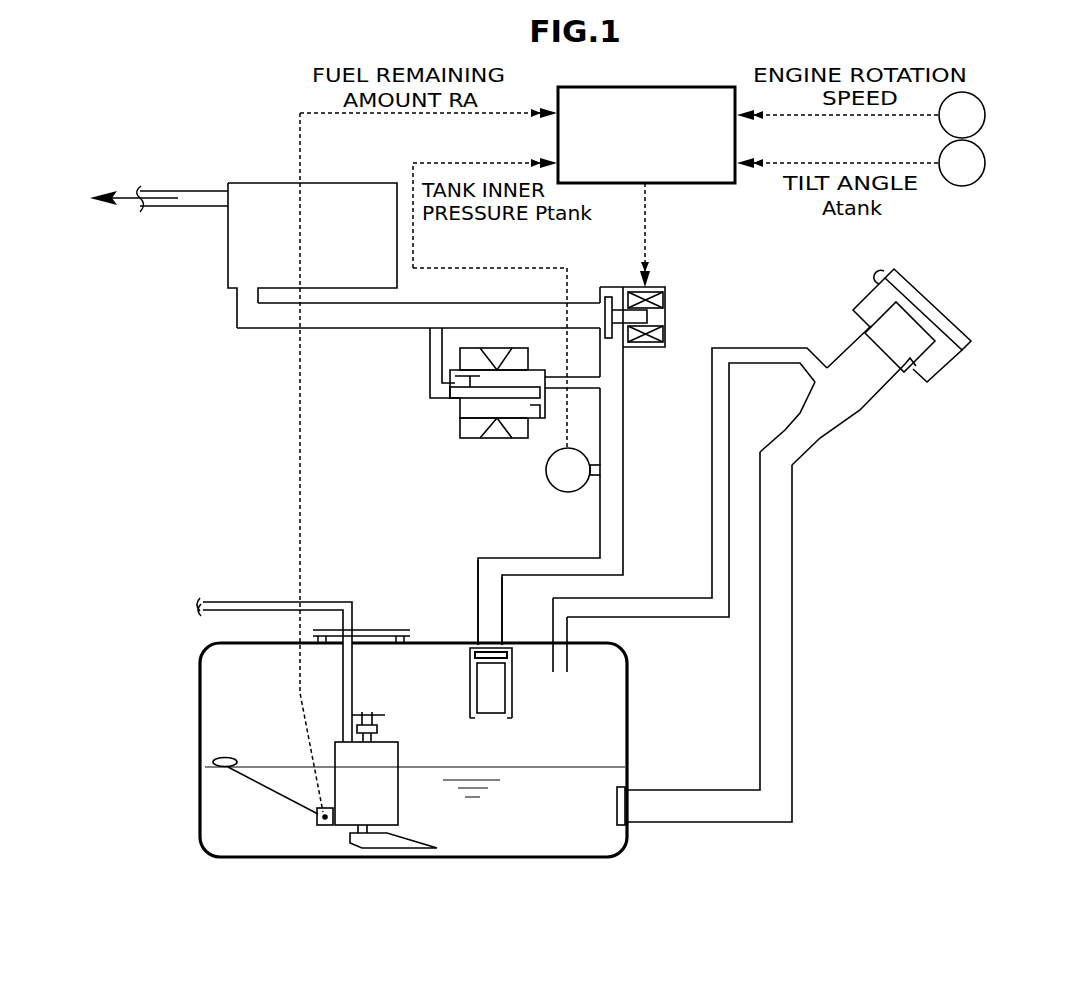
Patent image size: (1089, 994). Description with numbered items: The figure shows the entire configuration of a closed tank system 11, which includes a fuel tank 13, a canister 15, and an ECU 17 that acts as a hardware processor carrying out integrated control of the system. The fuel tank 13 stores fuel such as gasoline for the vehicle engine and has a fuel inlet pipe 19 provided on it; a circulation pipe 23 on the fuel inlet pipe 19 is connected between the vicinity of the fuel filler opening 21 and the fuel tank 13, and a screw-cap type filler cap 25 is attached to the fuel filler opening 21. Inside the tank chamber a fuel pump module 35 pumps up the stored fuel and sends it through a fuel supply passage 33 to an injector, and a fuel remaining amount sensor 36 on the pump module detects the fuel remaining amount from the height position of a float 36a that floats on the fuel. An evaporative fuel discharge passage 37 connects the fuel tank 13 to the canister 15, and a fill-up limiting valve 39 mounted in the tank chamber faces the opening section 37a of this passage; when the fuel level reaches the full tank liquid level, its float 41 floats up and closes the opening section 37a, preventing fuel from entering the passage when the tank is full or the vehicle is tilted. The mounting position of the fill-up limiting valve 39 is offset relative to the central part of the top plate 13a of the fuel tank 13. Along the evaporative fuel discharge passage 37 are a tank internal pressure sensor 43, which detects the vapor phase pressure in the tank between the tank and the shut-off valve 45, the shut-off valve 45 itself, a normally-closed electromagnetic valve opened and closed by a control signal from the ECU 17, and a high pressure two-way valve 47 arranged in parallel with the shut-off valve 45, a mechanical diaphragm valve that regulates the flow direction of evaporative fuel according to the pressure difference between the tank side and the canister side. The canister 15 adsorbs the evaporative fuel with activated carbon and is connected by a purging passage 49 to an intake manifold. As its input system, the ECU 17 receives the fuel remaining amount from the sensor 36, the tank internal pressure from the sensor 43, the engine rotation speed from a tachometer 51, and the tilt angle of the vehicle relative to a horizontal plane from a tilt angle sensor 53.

The closed tank system 11 is at (262, 92).
The fuel tank 13 is at (215, 655).
The top plate 13a is at (530, 640).
The canister 15 is at (352, 183).
The ECU 17 is at (685, 87).
The fuel inlet pipe 19 is at (778, 660).
The fuel filler opening 21 is at (897, 377).
The circulation pipe 23 is at (713, 480).
The filler cap 25 is at (888, 323).
The fuel supply passage 33 is at (237, 605).
The fuel pump module 35 is at (385, 792).
The fuel remaining amount sensor 36 is at (315, 822).
The float 36a is at (223, 755).
The evaporative fuel discharge passage 37 is at (362, 320).
The opening section 37a is at (490, 647).
The fill-up limiting valve 39 is at (512, 670).
The float 41 is at (490, 702).
The tank internal pressure sensor 43 is at (545, 470).
The shut-off valve 45 is at (667, 305).
The high pressure two-way valve 47 is at (452, 403).
The purging passage 49 is at (195, 197).
The tachometer 51 is at (985, 110).
The tilt angle sensor 53 is at (985, 158).